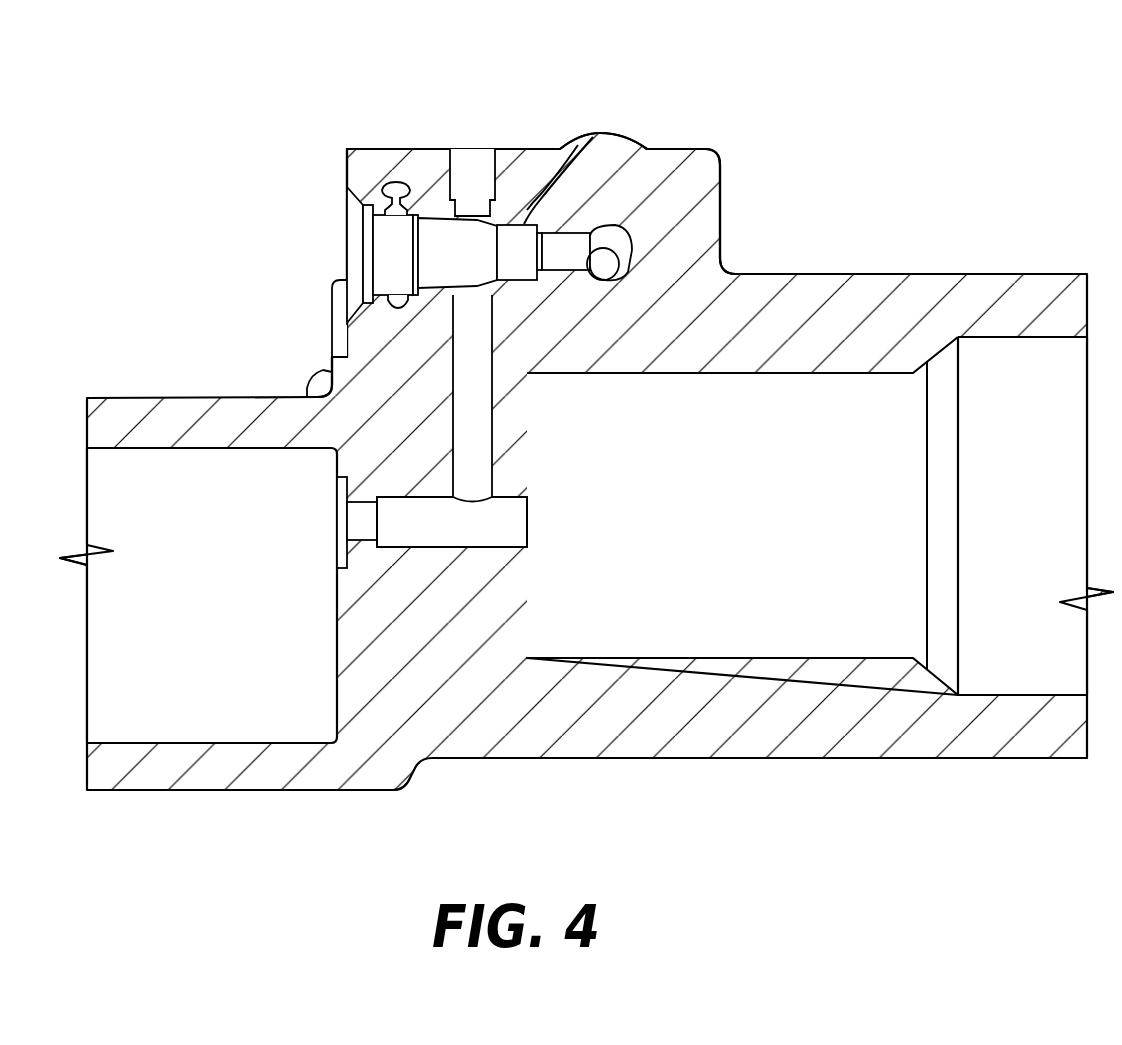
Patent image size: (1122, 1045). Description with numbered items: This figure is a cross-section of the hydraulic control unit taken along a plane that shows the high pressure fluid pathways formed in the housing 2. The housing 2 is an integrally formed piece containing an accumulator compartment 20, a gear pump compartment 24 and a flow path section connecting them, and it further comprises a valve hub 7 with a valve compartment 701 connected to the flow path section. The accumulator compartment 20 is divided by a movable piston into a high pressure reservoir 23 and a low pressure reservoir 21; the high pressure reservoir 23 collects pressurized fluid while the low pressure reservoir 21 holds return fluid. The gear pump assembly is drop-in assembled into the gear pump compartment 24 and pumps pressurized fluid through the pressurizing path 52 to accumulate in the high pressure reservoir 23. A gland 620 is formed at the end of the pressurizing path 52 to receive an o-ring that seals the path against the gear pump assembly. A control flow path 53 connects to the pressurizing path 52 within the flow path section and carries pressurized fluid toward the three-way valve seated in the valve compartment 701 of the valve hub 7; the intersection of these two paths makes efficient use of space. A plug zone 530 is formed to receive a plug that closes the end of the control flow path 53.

The accumulator compartment 20 is at (586, 410).
The housing 2 is at (940, 272).
The valve hub 7 is at (433, 82).
The low pressure reservoir 21 is at (998, 340).
The high pressure reservoir 23 is at (800, 376).
The gear pump compartment 24 is at (172, 450).
The pressurizing path 52 is at (470, 548).
The control flow path 53 is at (494, 364).
The plug zone 530 is at (503, 156).
The gland 620 is at (350, 480).
The valve compartment 701 is at (600, 135).